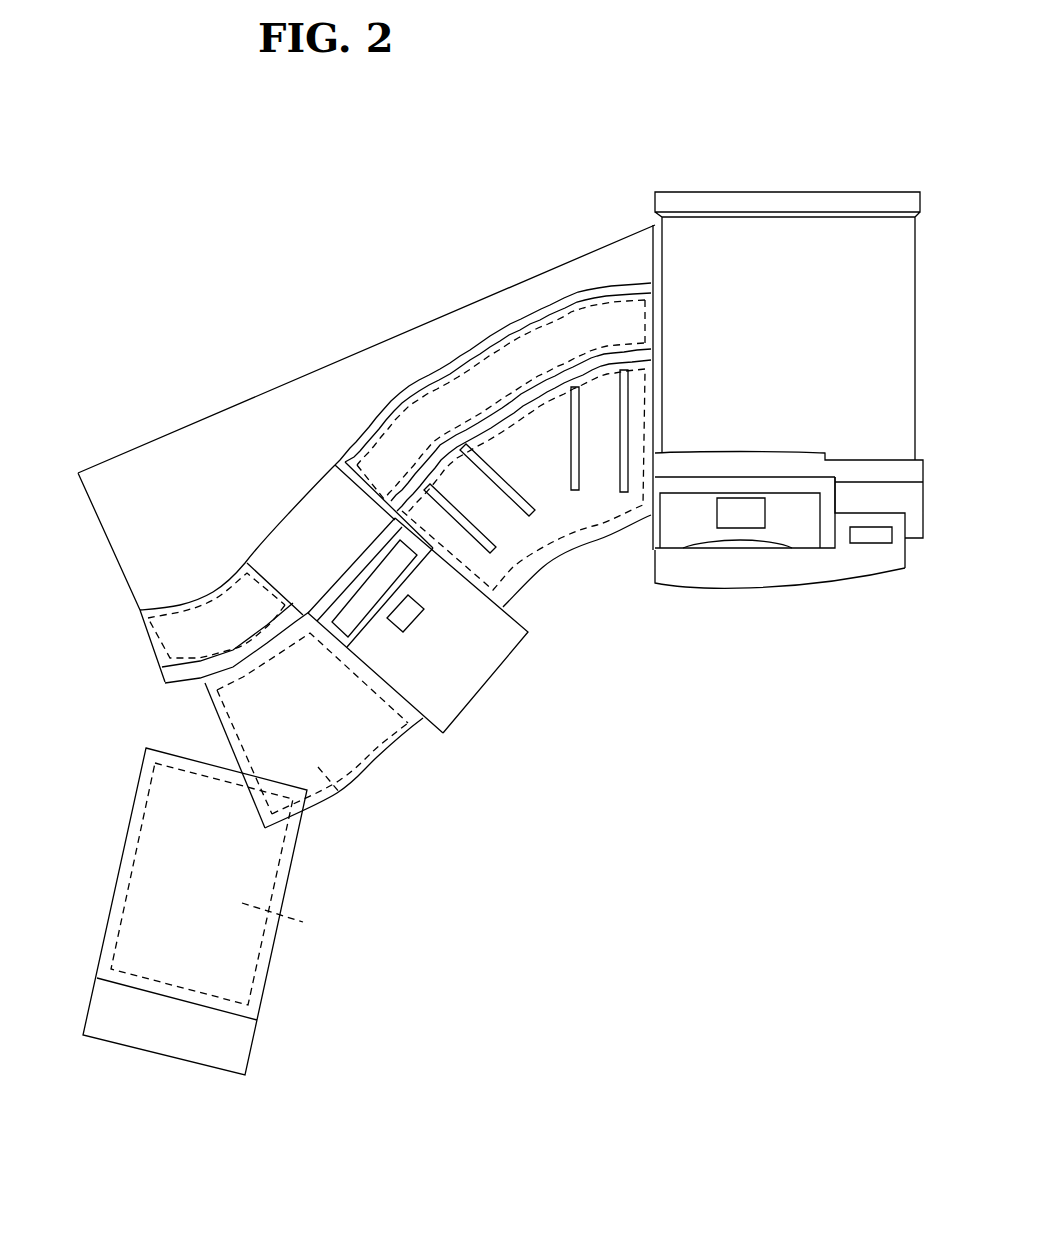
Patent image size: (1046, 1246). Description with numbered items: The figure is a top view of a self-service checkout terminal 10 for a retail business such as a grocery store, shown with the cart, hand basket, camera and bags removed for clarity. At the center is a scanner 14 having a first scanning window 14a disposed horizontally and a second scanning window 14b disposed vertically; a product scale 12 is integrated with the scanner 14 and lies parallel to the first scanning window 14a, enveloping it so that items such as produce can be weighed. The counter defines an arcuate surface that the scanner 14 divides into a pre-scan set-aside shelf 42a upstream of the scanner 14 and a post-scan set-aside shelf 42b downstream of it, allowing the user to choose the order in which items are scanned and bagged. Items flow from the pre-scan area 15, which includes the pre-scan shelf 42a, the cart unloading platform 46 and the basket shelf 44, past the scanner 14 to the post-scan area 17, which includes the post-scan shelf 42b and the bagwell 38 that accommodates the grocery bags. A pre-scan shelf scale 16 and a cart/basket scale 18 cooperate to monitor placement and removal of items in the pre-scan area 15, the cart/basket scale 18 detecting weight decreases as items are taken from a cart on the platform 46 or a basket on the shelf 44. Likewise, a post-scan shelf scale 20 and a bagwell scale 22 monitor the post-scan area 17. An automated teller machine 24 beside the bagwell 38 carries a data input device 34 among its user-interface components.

The self-service checkout terminal 10 is at (290, 218).
The product scale 12 is at (455, 693).
The scanner 14 is at (498, 652).
The first scanning window 14a is at (406, 612).
The second scanning window 14b is at (385, 582).
The pre-scan area 15 is at (150, 715).
The pre-scan shelf scale 16 is at (150, 638).
The post-scan area 17 is at (498, 330).
The cart/basket scale 18 is at (347, 806).
The post-scan shelf scale 20 is at (350, 418).
The bagwell scale 22 is at (545, 590).
The automated teller machine 24 is at (826, 240).
The data input device 34 is at (740, 515).
The bagwell 38 is at (562, 512).
The pre-scan set-aside shelf 42a is at (235, 620).
The post-scan set-aside shelf 42b is at (437, 420).
The basket shelf 44 is at (350, 725).
The cart unloading platform 46 is at (230, 965).